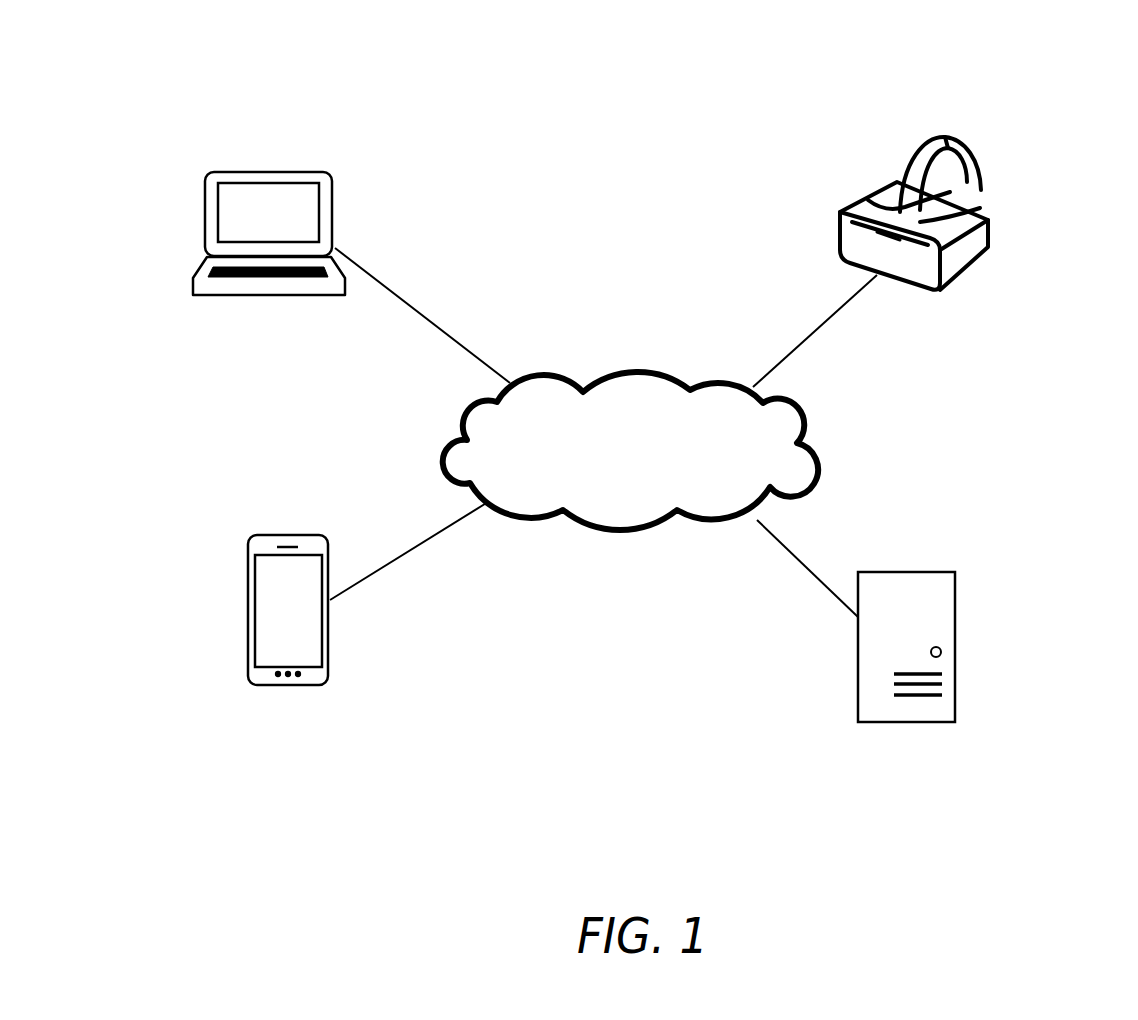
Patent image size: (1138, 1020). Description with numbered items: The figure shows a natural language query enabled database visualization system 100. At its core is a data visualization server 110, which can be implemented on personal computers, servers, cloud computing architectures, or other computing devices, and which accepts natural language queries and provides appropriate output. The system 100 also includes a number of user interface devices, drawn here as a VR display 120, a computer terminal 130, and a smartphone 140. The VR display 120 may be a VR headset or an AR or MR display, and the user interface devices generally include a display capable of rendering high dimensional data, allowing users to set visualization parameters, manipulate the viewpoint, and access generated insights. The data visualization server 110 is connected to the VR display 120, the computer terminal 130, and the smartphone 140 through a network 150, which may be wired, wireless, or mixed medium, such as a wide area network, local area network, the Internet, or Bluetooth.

The NLQ-enabled database visualization system 100 is at (569, 138).
The data visualization server 110 is at (951, 645).
The VR display 120 is at (988, 218).
The computer terminal 130 is at (205, 190).
The smartphone 140 is at (245, 617).
The network 150 is at (628, 375).